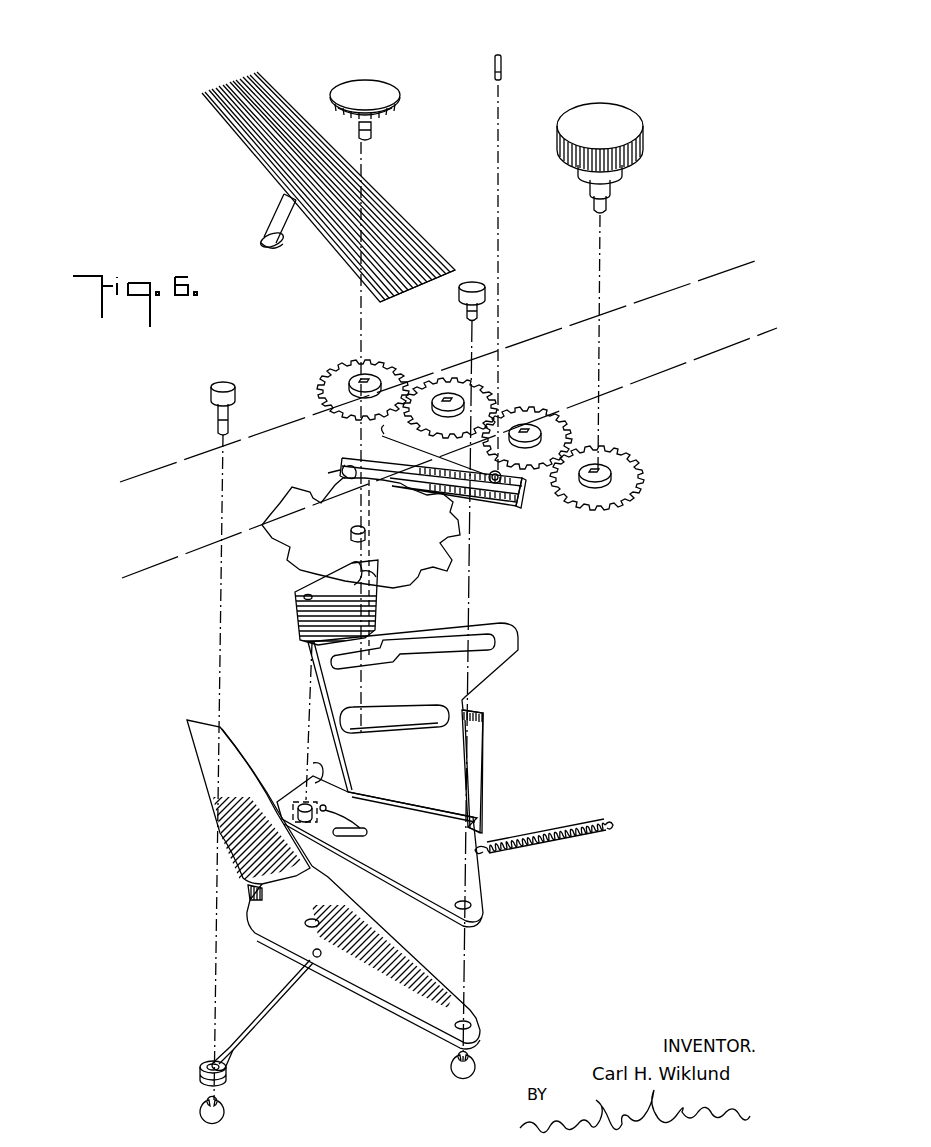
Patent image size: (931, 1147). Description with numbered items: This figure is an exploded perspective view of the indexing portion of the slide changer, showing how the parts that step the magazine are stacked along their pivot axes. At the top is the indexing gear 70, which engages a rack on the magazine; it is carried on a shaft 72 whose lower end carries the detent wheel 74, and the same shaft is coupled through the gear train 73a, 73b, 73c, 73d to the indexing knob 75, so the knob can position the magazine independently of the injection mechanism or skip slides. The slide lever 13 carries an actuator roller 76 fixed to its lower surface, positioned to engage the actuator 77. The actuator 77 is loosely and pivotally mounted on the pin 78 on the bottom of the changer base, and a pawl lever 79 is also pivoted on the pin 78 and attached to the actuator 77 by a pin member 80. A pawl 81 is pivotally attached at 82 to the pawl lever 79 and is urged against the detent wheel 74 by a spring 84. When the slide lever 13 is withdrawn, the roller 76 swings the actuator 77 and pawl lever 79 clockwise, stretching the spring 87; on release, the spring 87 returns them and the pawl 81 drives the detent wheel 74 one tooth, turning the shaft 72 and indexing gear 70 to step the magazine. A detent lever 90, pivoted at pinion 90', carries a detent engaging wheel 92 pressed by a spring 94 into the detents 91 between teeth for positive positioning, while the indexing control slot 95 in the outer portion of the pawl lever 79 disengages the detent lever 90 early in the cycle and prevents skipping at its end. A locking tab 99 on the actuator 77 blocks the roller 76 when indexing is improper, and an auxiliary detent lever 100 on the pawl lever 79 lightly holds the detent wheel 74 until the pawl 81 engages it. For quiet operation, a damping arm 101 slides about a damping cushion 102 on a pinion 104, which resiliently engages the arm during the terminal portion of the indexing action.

The slide lever 13 is at (393, 215).
The indexing gear 70 is at (388, 90).
The shaft 72 is at (372, 134).
The gear train gear 73a is at (628, 477).
The gear train gear 73b is at (540, 415).
The gear train gear 73c is at (492, 397).
The gear train gear 73d is at (398, 375).
The detent wheel 74 is at (302, 568).
The indexing knob 75 is at (634, 124).
The actuator roller 76 is at (280, 248).
The actuator 77 is at (210, 786).
The pin 78 is at (482, 288).
The pawl lever 79 is at (457, 770).
The pin member 80 is at (302, 797).
The pawl 81 is at (307, 623).
The pawl pivot 82 is at (316, 760).
The spring 84 is at (367, 828).
The spring 87 is at (547, 830).
The detent lever 90 is at (431, 496).
The pinion 90' is at (535, 500).
The detents 91 is at (503, 65).
The detent engaging wheel 92 is at (340, 470).
The spring 94 is at (417, 448).
The indexing control slot 95 is at (457, 642).
The locking tab 99 is at (250, 897).
The auxiliary detent lever 100 is at (483, 788).
The damping arm 101 is at (277, 1008).
The damping cushion 102 is at (227, 1068).
The pinion 104 is at (235, 386).